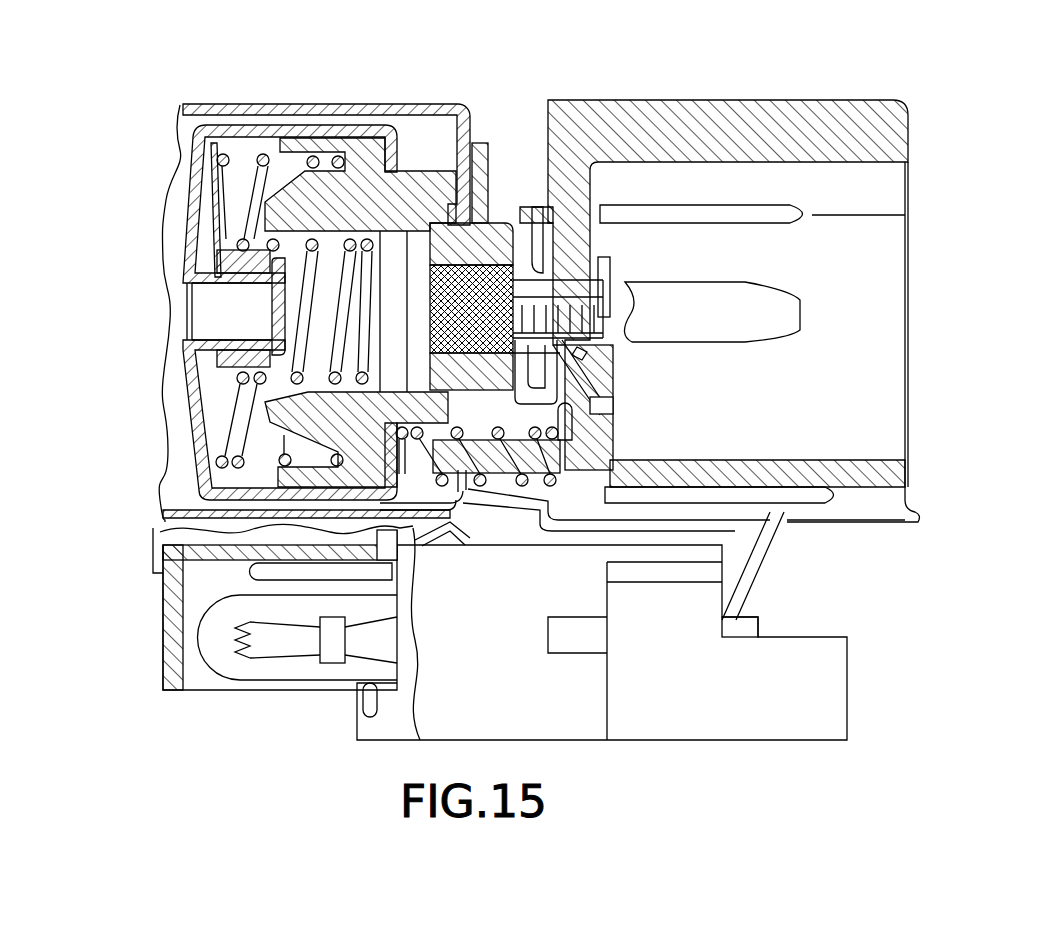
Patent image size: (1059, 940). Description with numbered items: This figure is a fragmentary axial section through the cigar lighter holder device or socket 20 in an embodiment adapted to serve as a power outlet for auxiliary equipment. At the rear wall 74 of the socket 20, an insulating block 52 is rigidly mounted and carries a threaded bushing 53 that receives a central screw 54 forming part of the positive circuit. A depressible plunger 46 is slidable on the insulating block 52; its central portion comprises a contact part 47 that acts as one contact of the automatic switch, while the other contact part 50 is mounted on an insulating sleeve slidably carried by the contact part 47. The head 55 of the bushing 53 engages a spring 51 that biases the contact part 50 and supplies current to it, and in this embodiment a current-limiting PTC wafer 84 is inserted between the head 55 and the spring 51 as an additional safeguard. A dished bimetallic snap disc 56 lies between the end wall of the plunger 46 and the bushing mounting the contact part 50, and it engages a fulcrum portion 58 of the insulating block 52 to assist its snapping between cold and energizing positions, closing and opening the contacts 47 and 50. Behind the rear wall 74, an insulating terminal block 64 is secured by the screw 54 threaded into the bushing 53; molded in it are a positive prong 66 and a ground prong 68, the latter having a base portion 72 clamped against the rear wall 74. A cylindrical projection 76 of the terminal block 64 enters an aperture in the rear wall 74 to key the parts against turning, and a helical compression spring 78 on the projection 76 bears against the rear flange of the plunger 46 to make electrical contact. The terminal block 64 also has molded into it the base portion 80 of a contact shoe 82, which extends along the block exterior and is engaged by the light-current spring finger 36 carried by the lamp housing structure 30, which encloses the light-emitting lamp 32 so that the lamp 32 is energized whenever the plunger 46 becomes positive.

The holder device or socket 20 is at (148, 427).
The housing structure 30 is at (563, 710).
The light-emitting means 32 is at (235, 663).
The spring finger 36 is at (755, 570).
The plunger 46 is at (287, 127).
The contact part 47 is at (248, 296).
The contact part 50 is at (283, 307).
The spring 51 is at (305, 278).
The insulating block 52 is at (365, 183).
The threaded bushing 53 is at (505, 262).
The central screw 54 is at (600, 357).
The head of the bushing 55 is at (450, 203).
The bimetallic snap disc 56 is at (236, 155).
The fulcrum portion 58 is at (317, 155).
The insulating terminal block 64 is at (652, 113).
The positive prong 66 is at (723, 213).
The ground prong 68 is at (750, 327).
The base portion 72 is at (487, 163).
The rear wall 74 is at (470, 112).
The cylindrical projection 76 is at (555, 487).
The helical compression spring 78 is at (517, 487).
The base portion 80 is at (563, 428).
The contact shoe 82 is at (753, 493).
The current-limiting PTC wafer 84 is at (410, 203).